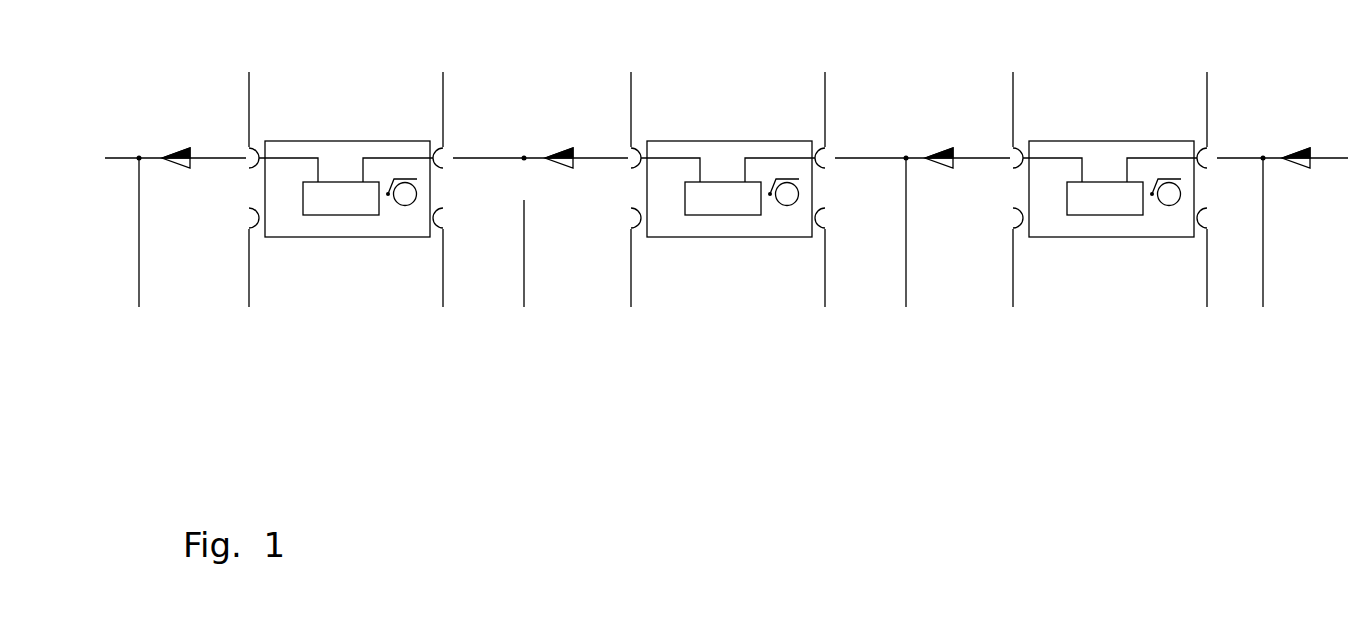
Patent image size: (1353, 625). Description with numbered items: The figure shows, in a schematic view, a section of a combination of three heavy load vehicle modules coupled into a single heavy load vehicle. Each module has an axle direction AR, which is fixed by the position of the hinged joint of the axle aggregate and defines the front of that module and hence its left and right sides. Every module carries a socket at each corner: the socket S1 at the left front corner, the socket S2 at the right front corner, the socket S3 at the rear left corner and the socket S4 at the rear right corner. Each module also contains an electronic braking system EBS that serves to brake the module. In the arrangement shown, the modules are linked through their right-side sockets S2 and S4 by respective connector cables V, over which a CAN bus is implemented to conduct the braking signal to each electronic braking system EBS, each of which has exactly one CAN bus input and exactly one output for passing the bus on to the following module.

The connector cable V is at (701, 245).
The socket S1 is at (630, 271).
The socket S2 is at (630, 107).
The socket S3 is at (823, 271).
The socket S4 is at (823, 107).
The electronic braking system EBS is at (723, 198).
The axle direction AR is at (1147, 307).